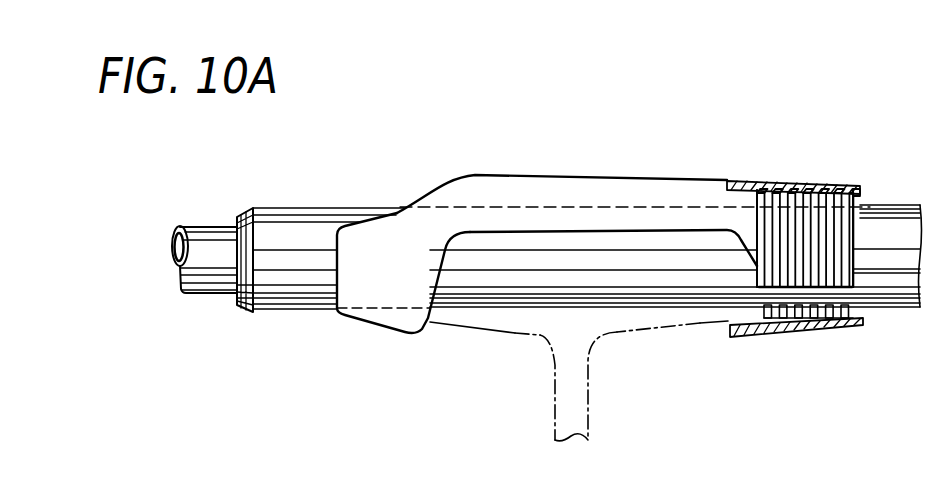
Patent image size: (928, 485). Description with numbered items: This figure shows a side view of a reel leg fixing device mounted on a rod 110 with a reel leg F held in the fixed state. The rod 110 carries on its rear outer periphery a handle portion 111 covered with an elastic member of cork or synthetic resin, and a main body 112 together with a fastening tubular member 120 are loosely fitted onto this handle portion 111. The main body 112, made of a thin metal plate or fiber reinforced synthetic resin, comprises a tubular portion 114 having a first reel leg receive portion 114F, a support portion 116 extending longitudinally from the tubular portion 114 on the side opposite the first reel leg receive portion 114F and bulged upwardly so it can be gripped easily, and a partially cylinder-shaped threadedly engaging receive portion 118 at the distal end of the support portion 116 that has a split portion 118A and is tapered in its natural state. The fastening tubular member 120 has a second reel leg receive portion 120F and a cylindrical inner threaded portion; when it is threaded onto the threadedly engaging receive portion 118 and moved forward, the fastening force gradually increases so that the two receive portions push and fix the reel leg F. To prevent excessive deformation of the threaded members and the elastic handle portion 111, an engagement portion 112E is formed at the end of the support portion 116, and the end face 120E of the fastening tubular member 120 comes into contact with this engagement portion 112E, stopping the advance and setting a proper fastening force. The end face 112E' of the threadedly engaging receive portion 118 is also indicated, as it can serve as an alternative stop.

The rod 110 is at (207, 242).
The handle portion 111 is at (283, 233).
The main body 112 is at (562, 177).
The engagement portion 112E is at (770, 150).
The end face of the threadedly engaging receive portion 112E' is at (886, 198).
The tubular portion 114 is at (383, 229).
The first reel leg receive portion 114F is at (420, 322).
The support portion 116 is at (492, 188).
The threadedly engaging receive portion 118 is at (820, 217).
The split portion 118A is at (838, 326).
The fastening tubular member 120 is at (800, 185).
The end face 120E is at (729, 334).
The second reel leg receive portion 120F is at (700, 320).
The reel leg F is at (553, 368).